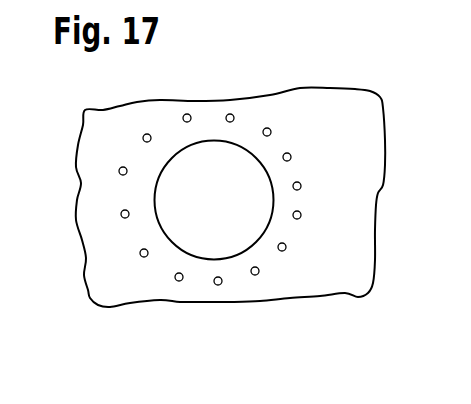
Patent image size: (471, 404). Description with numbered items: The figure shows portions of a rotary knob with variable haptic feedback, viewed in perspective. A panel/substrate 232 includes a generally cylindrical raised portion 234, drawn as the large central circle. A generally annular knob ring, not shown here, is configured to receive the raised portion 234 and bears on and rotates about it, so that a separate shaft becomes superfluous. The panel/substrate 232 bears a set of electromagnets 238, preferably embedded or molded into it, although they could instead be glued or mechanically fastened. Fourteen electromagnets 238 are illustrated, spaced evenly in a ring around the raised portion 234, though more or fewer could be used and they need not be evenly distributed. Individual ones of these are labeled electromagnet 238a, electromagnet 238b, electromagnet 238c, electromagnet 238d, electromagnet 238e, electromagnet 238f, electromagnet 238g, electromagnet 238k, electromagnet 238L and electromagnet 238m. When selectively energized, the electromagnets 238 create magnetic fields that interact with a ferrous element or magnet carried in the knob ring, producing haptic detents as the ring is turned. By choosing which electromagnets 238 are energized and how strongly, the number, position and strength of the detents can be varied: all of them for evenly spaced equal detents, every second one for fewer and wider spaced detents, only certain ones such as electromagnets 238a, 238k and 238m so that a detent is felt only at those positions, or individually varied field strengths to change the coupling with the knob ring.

The panel/substrate 232 is at (100, 125).
The raised portion 234 is at (252, 170).
The electromagnets 238 is at (284, 252).
The electromagnet 238a is at (144, 134).
The electromagnet 238b is at (186, 114).
The electromagnet 238c is at (232, 114).
The electromagnet 238d is at (267, 128).
The electromagnet 238e is at (292, 155).
The electromagnet 238f is at (302, 182).
The electromagnet 238g is at (302, 218).
The electromagnet 238k is at (178, 282).
The electromagnet 238L is at (141, 256).
The electromagnet 238m is at (122, 212).